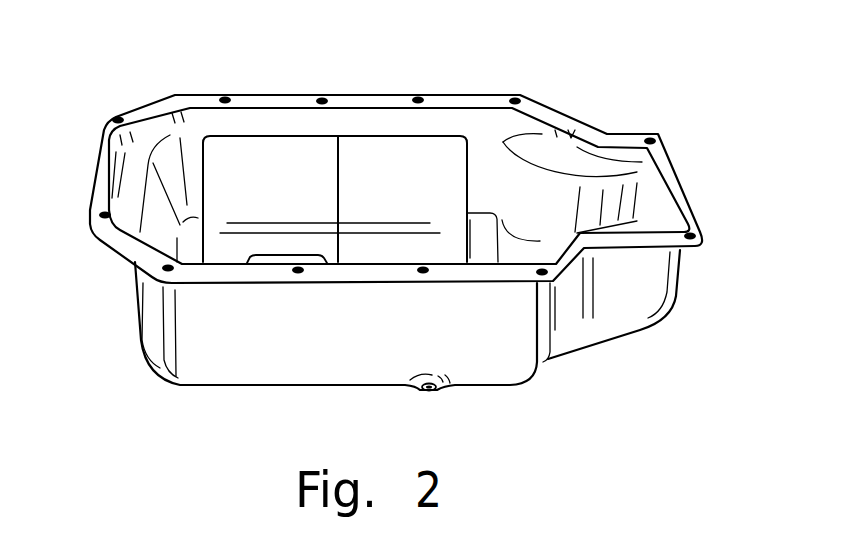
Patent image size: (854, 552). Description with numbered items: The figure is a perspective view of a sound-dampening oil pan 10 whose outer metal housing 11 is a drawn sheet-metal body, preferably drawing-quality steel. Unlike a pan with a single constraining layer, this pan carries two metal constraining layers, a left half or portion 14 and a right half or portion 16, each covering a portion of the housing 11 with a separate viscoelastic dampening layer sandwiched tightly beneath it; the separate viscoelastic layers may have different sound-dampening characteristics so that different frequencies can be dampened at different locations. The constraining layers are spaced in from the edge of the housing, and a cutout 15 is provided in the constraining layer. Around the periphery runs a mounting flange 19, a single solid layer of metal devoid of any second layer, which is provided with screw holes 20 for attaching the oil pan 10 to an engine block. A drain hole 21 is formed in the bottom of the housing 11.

The oil pan 10 is at (604, 396).
The outer metal housing 11 is at (648, 289).
The left half or portion 14 is at (285, 174).
The cutout 15 is at (272, 256).
The right half or portion 16 is at (385, 150).
The mounting flange 19 is at (107, 243).
The screw holes 20 is at (418, 97).
The drain hole 21 is at (430, 392).